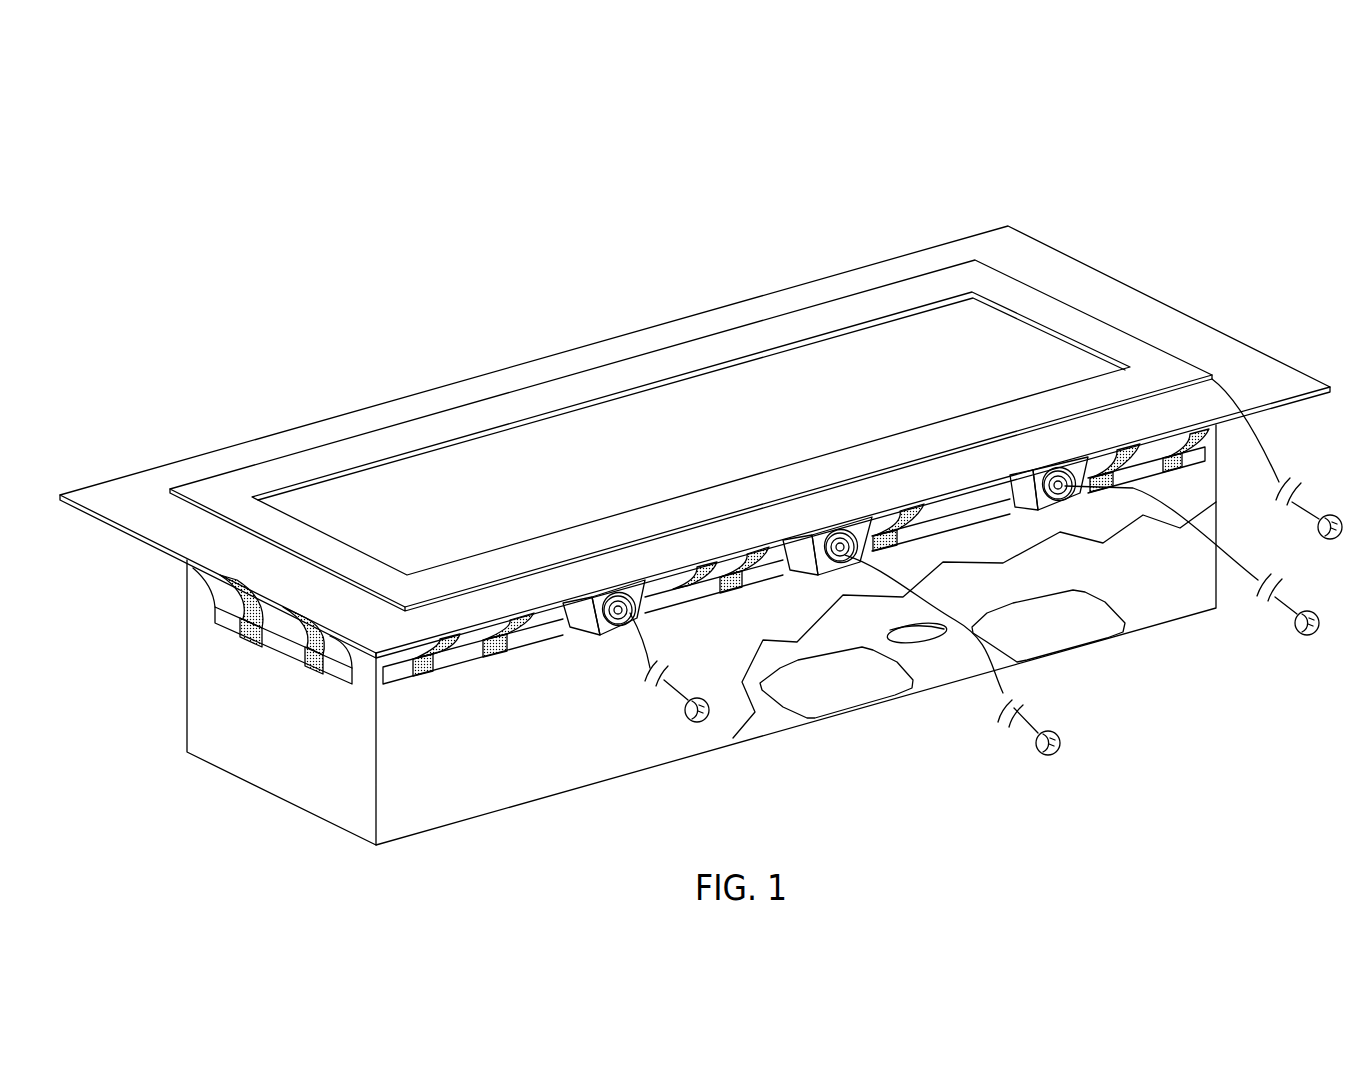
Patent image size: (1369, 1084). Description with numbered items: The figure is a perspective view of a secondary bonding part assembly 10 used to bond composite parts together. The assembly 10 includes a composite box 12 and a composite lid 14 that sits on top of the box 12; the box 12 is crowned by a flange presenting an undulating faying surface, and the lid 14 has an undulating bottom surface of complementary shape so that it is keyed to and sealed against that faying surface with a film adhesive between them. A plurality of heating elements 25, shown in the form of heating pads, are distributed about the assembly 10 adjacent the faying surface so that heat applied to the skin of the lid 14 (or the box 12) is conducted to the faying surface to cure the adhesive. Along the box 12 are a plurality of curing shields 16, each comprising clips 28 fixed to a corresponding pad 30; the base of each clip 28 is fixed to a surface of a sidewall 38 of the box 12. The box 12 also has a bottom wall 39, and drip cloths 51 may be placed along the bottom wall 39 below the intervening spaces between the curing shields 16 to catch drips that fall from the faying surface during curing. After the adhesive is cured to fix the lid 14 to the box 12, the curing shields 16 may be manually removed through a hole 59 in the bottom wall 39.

The secondary bonding part assembly 10 is at (1152, 238).
The composite box 12 is at (168, 732).
The composite lid 14 is at (130, 470).
The curing shields 16 is at (203, 596).
The heating elements 25 is at (922, 292).
The clips 28 is at (245, 638).
The pad 30 is at (283, 651).
The sidewall 38 is at (511, 784).
The bottom wall 39 is at (918, 672).
The drip cloths 51 is at (833, 675).
The hole 59 is at (930, 636).